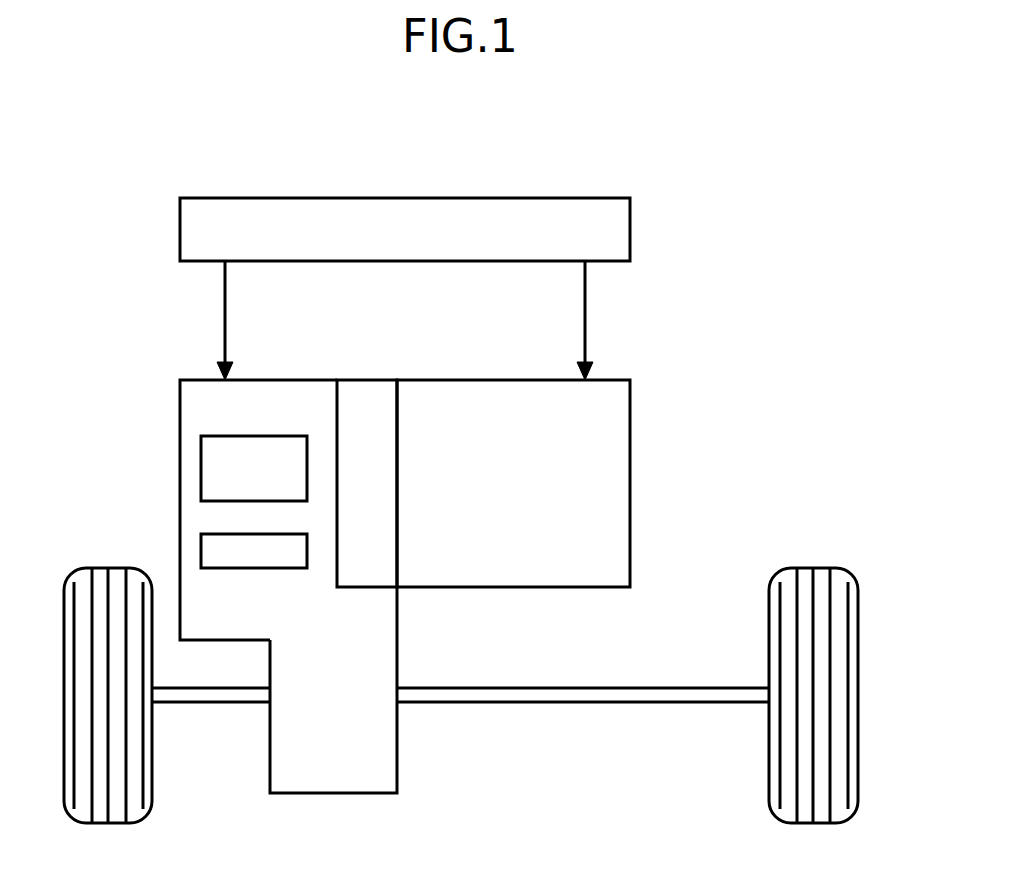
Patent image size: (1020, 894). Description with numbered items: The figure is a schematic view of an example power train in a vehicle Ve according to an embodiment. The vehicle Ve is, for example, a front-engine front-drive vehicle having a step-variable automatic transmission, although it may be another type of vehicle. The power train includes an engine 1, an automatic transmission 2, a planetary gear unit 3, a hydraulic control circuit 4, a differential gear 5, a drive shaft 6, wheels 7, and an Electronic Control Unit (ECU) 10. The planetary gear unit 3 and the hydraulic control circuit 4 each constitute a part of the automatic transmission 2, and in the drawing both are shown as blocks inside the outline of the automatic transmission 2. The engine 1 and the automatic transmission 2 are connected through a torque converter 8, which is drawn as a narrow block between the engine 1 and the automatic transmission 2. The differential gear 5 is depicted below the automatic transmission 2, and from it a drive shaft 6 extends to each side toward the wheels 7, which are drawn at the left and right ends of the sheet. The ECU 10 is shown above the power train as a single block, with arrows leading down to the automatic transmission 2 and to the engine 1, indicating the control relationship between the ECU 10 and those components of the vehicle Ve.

The vehicle Ve is at (708, 160).
The Electronic Control Unit (ECU) 10 is at (402, 197).
The engine 1 is at (511, 589).
The automatic transmission 2 is at (274, 378).
The planetary gear unit 3 is at (201, 463).
The hydraulic control circuit 4 is at (201, 547).
The differential gear 5 is at (330, 795).
The drive shaft 6 is at (208, 704).
The wheels 7 is at (106, 825).
The torque converter 8 is at (364, 378).